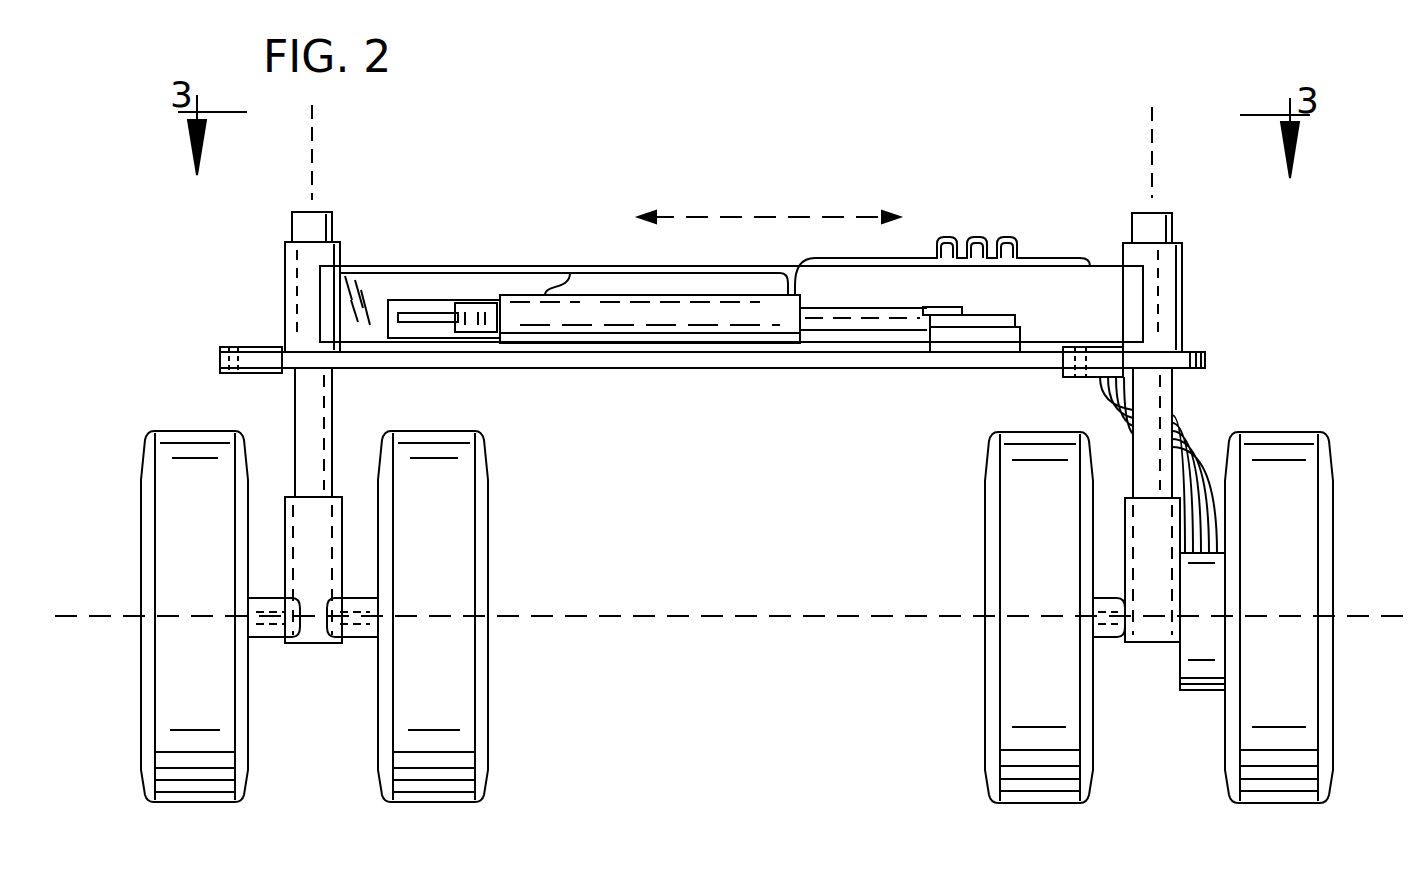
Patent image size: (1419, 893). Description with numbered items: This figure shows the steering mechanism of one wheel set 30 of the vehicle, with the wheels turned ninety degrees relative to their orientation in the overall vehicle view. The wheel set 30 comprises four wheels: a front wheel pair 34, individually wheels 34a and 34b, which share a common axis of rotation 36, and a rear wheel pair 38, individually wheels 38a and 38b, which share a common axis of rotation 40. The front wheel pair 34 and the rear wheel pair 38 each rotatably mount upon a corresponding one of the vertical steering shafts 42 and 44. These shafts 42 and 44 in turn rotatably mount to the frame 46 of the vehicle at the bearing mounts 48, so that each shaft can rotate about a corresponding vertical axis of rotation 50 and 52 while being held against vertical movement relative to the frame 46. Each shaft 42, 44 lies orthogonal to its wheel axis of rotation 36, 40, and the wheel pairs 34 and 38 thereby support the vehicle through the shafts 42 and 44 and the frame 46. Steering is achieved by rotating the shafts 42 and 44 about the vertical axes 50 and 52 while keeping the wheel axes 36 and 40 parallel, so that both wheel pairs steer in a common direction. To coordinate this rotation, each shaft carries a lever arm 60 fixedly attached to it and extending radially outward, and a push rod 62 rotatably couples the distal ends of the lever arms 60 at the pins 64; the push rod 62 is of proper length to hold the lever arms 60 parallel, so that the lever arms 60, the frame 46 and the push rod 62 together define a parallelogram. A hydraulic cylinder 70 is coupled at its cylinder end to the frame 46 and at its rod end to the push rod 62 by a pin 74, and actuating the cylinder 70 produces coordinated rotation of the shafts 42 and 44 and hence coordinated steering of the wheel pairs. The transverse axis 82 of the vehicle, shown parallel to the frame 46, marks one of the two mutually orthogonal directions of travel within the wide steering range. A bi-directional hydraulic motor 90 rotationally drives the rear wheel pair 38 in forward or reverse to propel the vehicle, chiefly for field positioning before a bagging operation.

The wheel set 30 is at (470, 183).
The front wheel pair 34 is at (322, 566).
The front wheel 34a is at (140, 498).
The front wheel 34b is at (490, 505).
The axis of rotation 36 is at (78, 613).
The rear wheel pair 38 is at (1162, 573).
The rear wheel 38a is at (985, 497).
The rear wheel 38b is at (1333, 500).
The axis of rotation 40 is at (1366, 614).
The vertical steering shaft 42 is at (342, 415).
The vertical steering shaft 44 is at (1175, 408).
The frame 46 is at (450, 264).
The bearing mount 48 is at (348, 240).
The vertical axis of rotation 50 is at (314, 138).
The vertical axis of rotation 52 is at (1154, 138).
The lever arm 60 is at (1205, 354).
The push rod 62 is at (730, 368).
The pin 64 is at (230, 347).
The hydraulic cylinder 70 is at (678, 294).
The pin 74 is at (472, 302).
The transverse axis 82 is at (742, 213).
The hydraulic motor 90 is at (1178, 670).